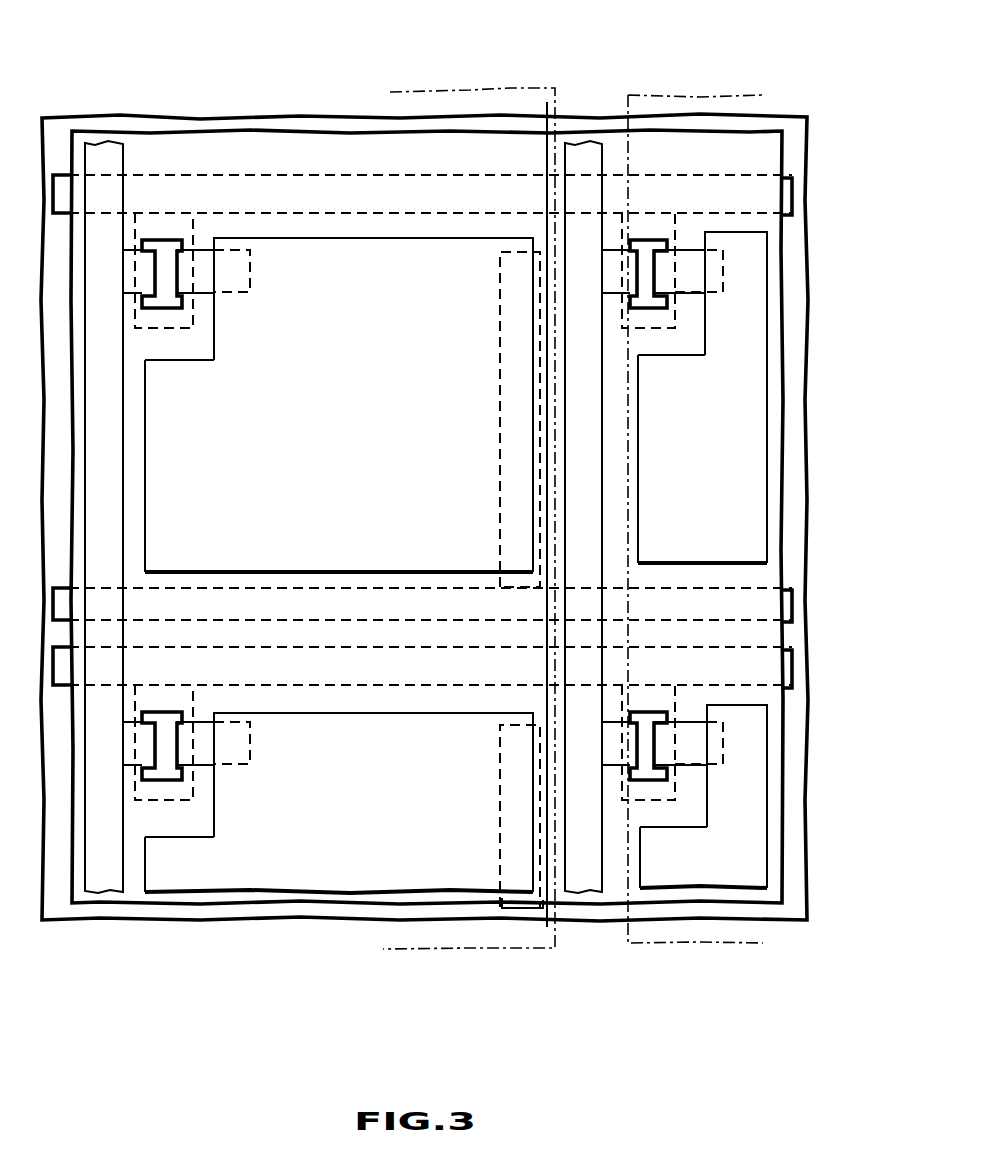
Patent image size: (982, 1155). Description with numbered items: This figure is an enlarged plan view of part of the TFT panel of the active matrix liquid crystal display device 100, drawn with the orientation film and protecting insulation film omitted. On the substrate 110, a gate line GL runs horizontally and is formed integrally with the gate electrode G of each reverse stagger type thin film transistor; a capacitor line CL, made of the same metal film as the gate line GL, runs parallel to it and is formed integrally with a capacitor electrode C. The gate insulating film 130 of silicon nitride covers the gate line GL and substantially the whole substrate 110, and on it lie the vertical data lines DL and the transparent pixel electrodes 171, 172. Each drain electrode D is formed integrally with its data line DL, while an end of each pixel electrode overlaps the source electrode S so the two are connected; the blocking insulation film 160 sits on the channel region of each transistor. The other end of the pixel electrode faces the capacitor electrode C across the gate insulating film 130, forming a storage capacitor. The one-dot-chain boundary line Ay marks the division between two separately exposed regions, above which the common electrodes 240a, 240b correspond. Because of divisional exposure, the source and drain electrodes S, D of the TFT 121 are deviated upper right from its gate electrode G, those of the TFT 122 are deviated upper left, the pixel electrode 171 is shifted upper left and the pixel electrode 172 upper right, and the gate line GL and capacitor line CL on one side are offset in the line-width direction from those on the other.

The liquid crystal display array substrate 100 is at (153, 921).
The substrate 110 is at (269, 920).
The gate insulating film 130 is at (218, 143).
The TFT 121 is at (174, 315).
The TFT 122 is at (646, 311).
The blocking insulation film 160 is at (163, 240).
The pixel electrode 171 is at (324, 250).
The pixel electrode 172 is at (741, 243).
The common electrode 240a is at (480, 105).
The common electrode 240b is at (693, 103).
The data line DL is at (100, 142).
The gate line GL is at (401, 215).
The capacitor line CL is at (338, 590).
The capacitor electrode C is at (512, 338).
The boundary line Ay is at (548, 410).
The drain electrode D is at (132, 270).
The source electrode S is at (200, 287).
The gate electrode G is at (195, 318).